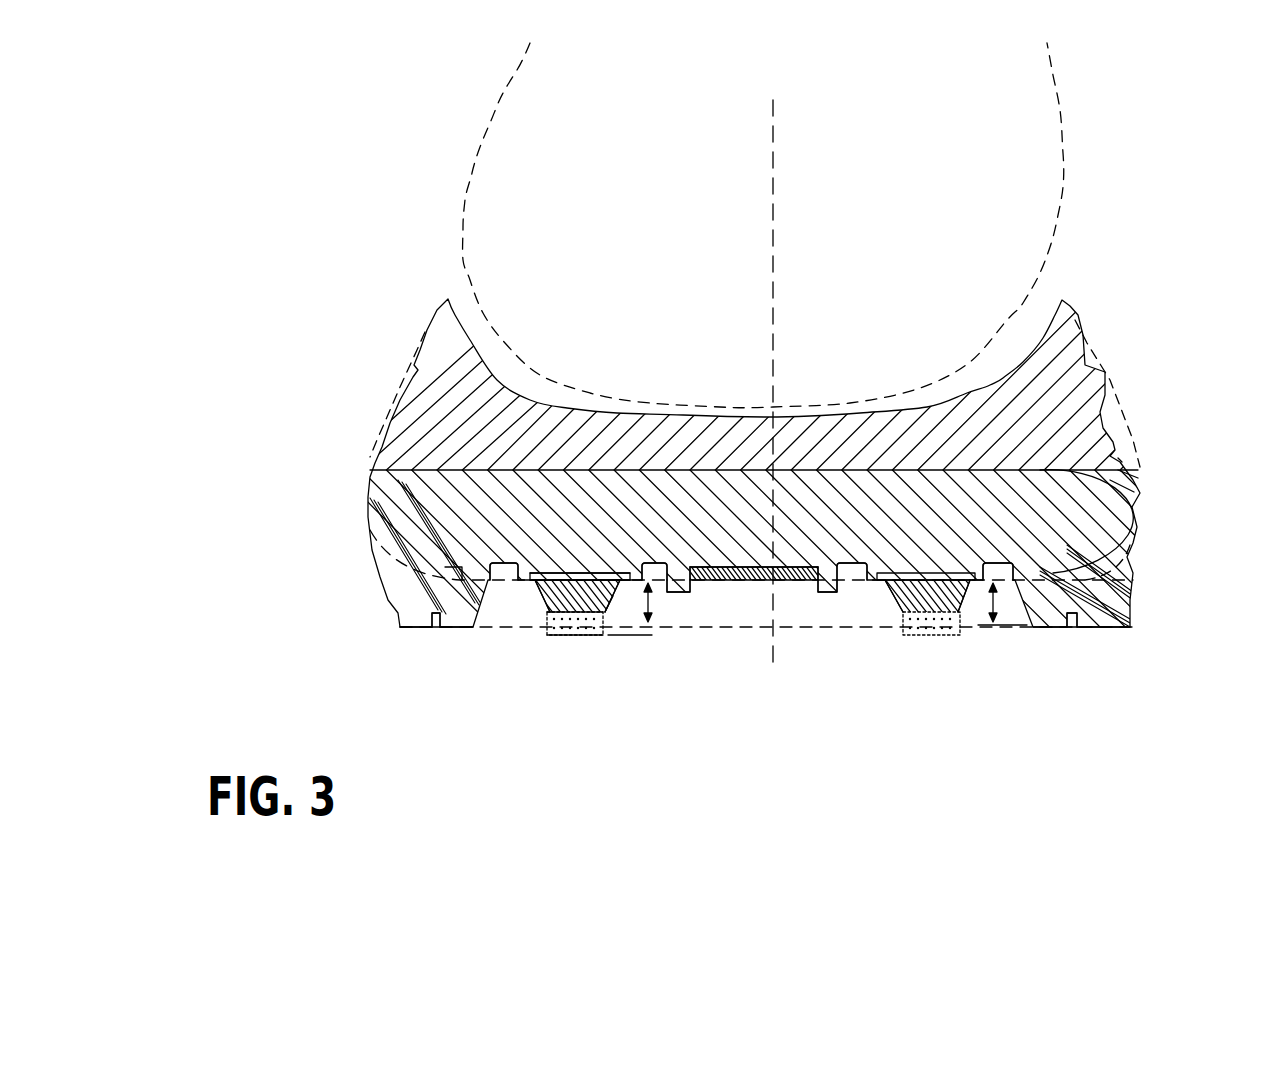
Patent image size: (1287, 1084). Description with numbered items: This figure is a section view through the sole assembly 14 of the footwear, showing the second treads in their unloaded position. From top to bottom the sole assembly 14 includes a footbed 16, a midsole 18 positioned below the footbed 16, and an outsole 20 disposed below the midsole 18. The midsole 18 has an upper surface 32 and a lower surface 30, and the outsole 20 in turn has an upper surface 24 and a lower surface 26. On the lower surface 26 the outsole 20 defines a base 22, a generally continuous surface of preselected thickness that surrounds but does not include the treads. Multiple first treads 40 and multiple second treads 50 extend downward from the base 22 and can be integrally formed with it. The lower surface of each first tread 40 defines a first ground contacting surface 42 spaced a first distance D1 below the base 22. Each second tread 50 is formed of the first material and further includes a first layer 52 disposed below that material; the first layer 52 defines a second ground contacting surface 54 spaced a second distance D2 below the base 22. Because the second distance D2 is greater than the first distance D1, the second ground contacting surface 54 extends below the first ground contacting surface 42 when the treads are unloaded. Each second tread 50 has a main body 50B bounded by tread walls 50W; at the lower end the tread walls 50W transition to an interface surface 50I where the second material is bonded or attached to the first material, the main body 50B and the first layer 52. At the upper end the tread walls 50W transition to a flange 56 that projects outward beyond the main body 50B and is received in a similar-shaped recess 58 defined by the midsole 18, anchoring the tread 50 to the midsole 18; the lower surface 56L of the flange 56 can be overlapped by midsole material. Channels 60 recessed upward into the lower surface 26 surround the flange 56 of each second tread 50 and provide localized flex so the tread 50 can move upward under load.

The sole assembly 14 is at (1147, 418).
The footbed 16 is at (1070, 405).
The midsole 18 is at (1100, 482).
The outsole 20 is at (382, 583).
The base 22 is at (795, 583).
The upper surface 24 is at (722, 475).
The lower surface 26 is at (737, 583).
The lower surface 30 is at (822, 593).
The upper surface 32 is at (537, 570).
The first treads 40 is at (412, 627).
The first ground contacting surface 42 is at (468, 625).
The second treads 50 is at (537, 607).
The interface surface 50I is at (535, 572).
The tread walls 50W is at (548, 616).
The main body 50B is at (582, 636).
The first layer 52 is at (571, 622).
The second ground contacting surface 54 is at (582, 632).
The flange 56 is at (540, 593).
The lower surface 56L is at (623, 612).
The recess 58 is at (573, 575).
The channels 60 is at (516, 562).
The first distance D1 is at (996, 605).
The second distance D2 is at (650, 608).